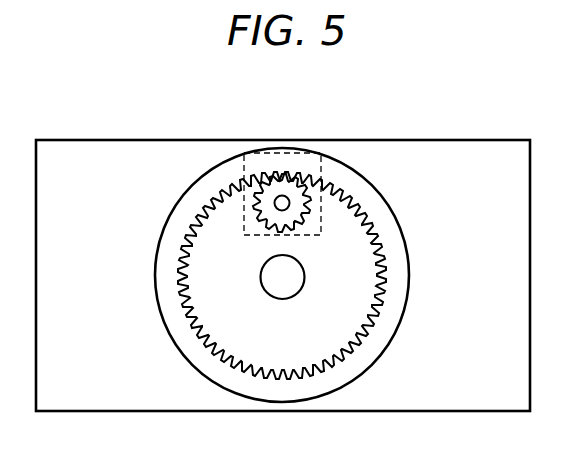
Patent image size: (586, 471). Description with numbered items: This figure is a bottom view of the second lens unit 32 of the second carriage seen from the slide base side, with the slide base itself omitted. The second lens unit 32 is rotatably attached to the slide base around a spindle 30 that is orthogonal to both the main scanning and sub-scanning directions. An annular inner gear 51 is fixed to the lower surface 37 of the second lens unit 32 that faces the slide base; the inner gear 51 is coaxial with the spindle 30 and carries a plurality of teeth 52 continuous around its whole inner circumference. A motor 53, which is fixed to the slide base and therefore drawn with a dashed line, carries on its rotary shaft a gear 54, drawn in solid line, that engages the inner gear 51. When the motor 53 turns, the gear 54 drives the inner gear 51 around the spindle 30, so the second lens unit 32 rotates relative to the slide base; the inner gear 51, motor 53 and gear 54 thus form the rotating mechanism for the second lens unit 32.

The spindle 30 is at (272, 280).
The second lens unit 32 is at (471, 140).
The lower surface 37 is at (483, 220).
The inner gear 51 is at (383, 338).
The teeth 52 is at (278, 369).
The motor 53 is at (325, 161).
The gear 54 is at (273, 190).